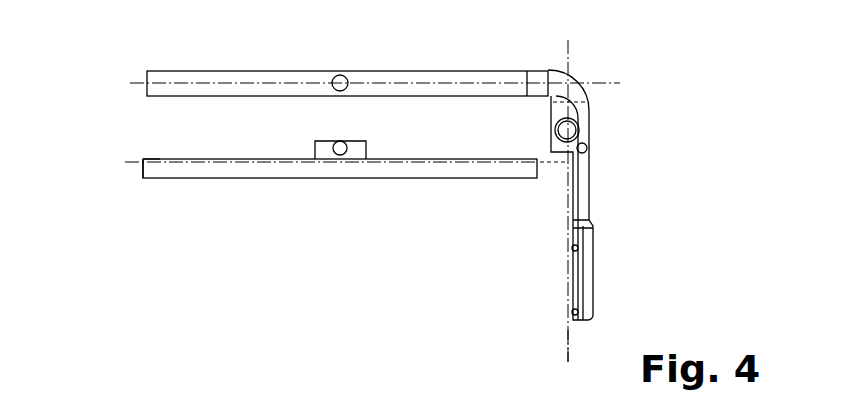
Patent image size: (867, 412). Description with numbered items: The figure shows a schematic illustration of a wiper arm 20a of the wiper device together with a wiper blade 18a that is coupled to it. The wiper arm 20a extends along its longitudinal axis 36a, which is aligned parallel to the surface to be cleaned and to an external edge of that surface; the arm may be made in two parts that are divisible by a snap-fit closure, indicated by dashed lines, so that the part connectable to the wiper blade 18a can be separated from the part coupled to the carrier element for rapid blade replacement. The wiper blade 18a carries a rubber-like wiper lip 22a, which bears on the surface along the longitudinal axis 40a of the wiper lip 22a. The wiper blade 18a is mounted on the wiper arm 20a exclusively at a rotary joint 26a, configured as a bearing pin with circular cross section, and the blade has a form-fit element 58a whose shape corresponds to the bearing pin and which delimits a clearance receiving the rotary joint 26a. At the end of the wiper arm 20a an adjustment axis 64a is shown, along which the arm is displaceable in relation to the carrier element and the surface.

The wiper blade 18a is at (307, 200).
The wiper arm 20a is at (181, 75).
The wiper lip 22a is at (168, 168).
The rotary joint 26a is at (342, 75).
The longitudinal axis of the wiper arm 36a is at (610, 88).
The longitudinal axis of the wiper lip 40a is at (137, 158).
The form-fit element 58a is at (348, 145).
The adjustment axis 64a is at (567, 345).